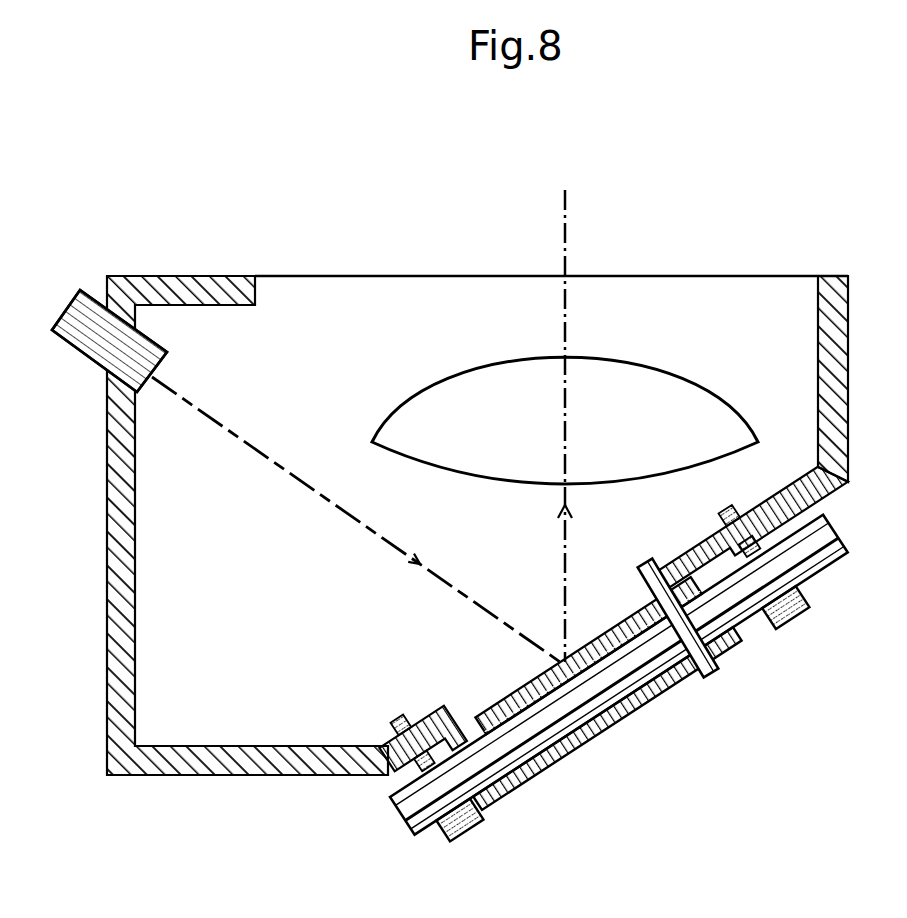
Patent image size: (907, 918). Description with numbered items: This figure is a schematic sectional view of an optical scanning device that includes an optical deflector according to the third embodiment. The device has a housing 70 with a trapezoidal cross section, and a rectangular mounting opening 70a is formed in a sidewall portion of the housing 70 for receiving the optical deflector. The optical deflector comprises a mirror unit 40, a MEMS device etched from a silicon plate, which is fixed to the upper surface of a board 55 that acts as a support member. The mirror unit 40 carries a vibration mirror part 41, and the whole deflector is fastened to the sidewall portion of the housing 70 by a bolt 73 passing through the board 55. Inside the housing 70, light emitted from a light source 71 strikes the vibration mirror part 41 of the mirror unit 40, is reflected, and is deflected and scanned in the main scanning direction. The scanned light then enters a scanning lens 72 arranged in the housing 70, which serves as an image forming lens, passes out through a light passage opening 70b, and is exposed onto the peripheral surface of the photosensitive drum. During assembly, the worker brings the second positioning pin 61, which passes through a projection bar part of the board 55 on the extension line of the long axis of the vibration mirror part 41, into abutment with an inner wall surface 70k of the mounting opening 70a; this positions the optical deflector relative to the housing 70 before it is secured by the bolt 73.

The housing 70 is at (172, 298).
The mounting opening 70a is at (458, 728).
The light passage opening 70b is at (257, 289).
The inner wall surface 70k is at (653, 563).
The light source 71 is at (78, 290).
The scanning lens 72 is at (650, 365).
The board 55 is at (827, 573).
The mirror unit 40 is at (621, 618).
The vibration mirror part 41 is at (600, 648).
The second positioning pin 61 is at (643, 563).
The bolt 73 is at (442, 834).